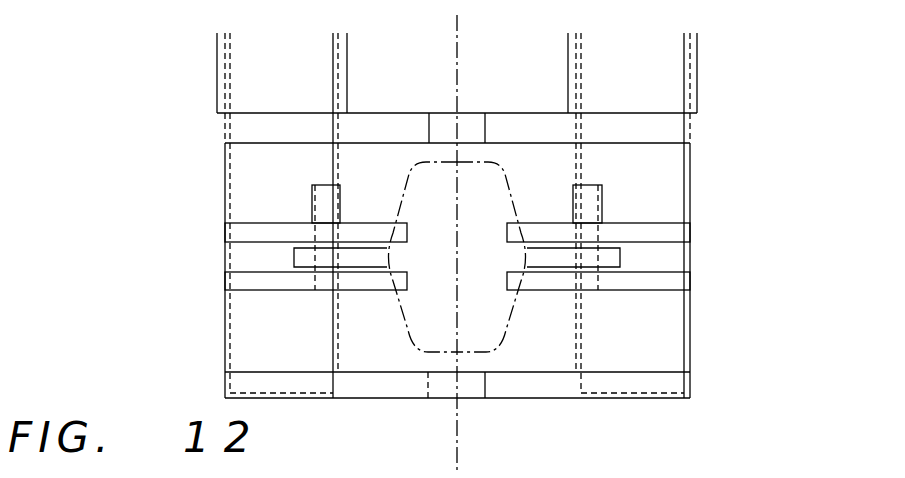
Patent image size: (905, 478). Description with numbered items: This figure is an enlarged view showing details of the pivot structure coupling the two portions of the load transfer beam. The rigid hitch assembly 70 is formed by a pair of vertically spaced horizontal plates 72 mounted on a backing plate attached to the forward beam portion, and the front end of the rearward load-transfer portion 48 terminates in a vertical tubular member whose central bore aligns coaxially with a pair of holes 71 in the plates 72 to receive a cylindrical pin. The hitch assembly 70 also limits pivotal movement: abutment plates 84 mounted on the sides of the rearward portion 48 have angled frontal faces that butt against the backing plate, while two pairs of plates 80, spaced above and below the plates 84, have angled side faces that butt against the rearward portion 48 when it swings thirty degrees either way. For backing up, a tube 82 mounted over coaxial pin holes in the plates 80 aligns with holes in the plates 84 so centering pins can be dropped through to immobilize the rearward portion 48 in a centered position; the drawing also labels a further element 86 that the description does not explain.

The rearward load-transfer portion 48 is at (506, 339).
The rigid hitch assembly 70 is at (628, 112).
The holes 71 is at (485, 141).
The horizontal plates 72 is at (336, 401).
The abutment plates 80 is at (276, 222).
The tube 82 is at (311, 185).
The abutment plates 84 is at (295, 268).
The lower flange 86 is at (314, 293).